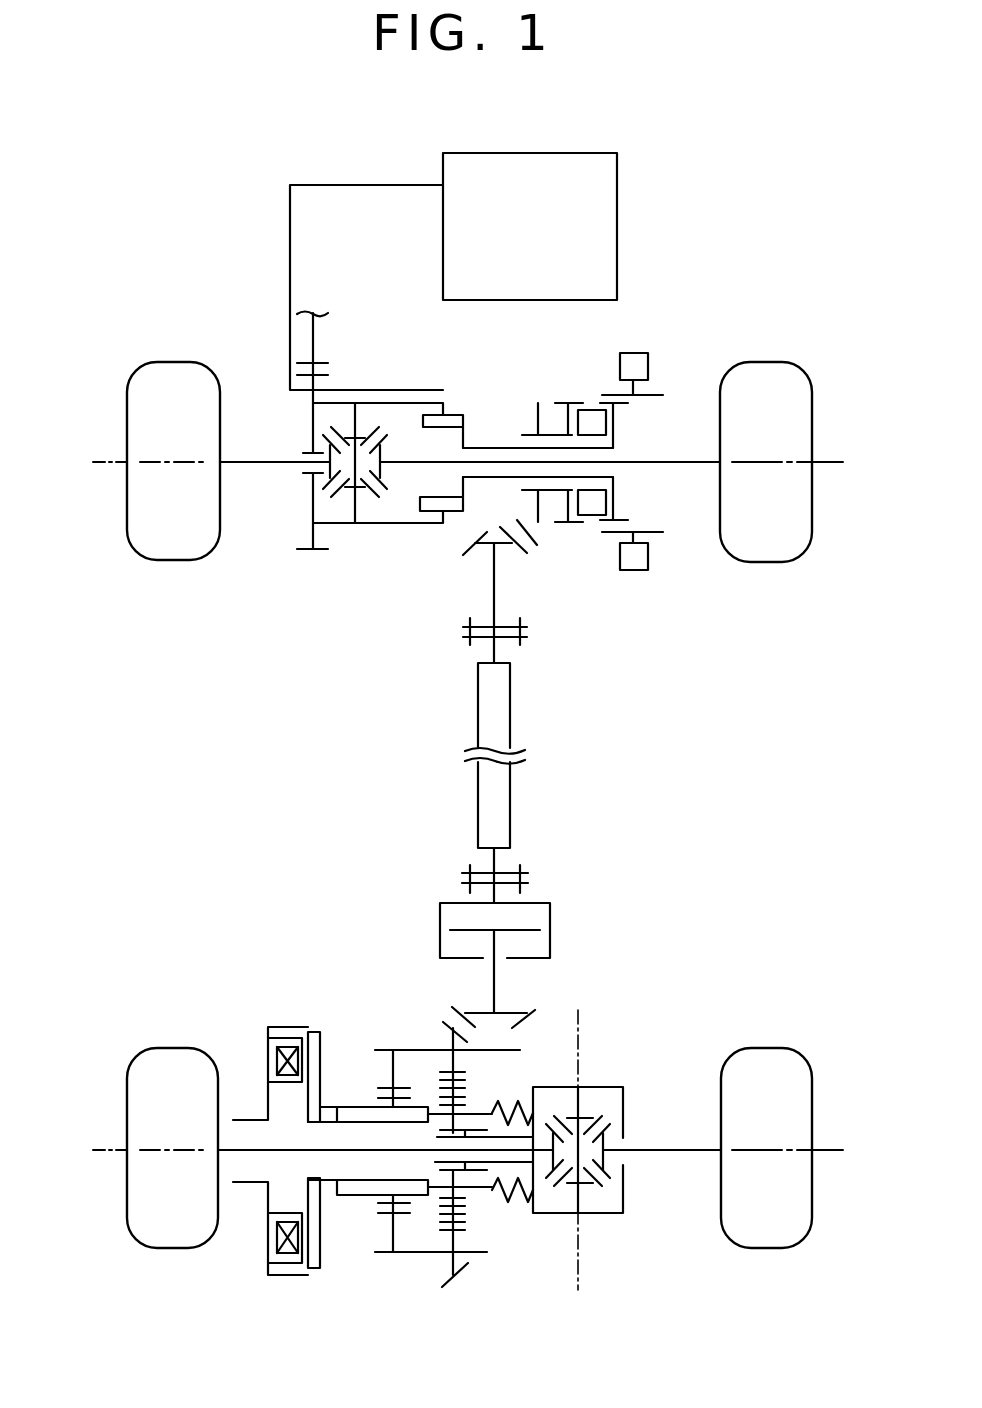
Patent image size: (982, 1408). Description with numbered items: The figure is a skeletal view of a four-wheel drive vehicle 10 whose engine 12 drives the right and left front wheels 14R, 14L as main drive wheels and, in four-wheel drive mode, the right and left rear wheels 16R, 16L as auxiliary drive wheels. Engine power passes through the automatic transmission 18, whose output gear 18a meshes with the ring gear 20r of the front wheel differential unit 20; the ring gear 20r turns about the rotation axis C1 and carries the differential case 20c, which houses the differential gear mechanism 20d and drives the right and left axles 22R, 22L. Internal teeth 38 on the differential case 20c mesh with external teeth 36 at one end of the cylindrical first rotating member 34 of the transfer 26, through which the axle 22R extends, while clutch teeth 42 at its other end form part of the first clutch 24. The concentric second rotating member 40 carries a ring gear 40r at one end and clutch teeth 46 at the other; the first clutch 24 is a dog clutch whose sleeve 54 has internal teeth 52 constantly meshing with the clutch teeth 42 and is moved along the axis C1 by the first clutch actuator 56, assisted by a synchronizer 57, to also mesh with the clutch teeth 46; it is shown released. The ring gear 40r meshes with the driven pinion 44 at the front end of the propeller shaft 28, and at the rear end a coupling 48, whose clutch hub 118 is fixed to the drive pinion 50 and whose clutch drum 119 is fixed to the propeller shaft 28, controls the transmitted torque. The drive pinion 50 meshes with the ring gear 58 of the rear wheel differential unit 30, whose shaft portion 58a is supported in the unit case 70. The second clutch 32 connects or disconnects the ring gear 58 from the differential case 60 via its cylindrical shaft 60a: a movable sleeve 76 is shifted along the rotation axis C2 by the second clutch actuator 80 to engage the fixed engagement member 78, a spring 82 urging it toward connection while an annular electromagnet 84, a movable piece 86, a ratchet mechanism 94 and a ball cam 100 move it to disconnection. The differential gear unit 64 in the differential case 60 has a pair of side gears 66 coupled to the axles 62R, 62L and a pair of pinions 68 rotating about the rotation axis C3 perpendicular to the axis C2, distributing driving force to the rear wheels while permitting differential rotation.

The four-wheel drive vehicle 10 is at (680, 83).
The engine 12 is at (555, 175).
The left front wheel 14L is at (150, 383).
The right front wheel 14R is at (767, 382).
The left rear wheel 16L is at (170, 1233).
The right rear wheel 16R is at (770, 1233).
The automatic transmission 18 is at (365, 185).
The output gear 18a is at (300, 358).
The front wheel differential unit 20 is at (332, 555).
The differential case 20c is at (377, 523).
The differential gear mechanism 20d is at (340, 508).
The ring gear 20r is at (303, 555).
The left axle 22L is at (257, 467).
The right axle 22R is at (687, 467).
The first clutch 24 is at (592, 588).
The transfer 26 is at (565, 617).
The propeller shaft 28 is at (498, 782).
The rear wheel differential unit 30 is at (310, 965).
The second clutch 32 is at (426, 1058).
The first rotating member 34 is at (492, 445).
The external teeth 36 is at (430, 463).
The internal teeth 38 is at (408, 403).
The second rotating member 40 is at (537, 402).
The ring gear 40r is at (517, 527).
The clutch teeth 42 is at (632, 402).
The driven pinion 44 is at (488, 588).
The clutch teeth 46 is at (553, 402).
The coupling 48 is at (540, 893).
The drive pinion 50 is at (524, 1004).
The internal teeth 52 is at (630, 400).
The sleeve 54 is at (658, 392).
The first clutch actuator 56 is at (637, 360).
The synchronizer 57 is at (592, 505).
The ring gear 58 is at (442, 1017).
The shaft portion 58a is at (482, 1048).
The differential case 60 is at (592, 1072).
The cylindrical shaft 60a is at (437, 1138).
The left axle 62L is at (278, 1148).
The right axle 62R is at (668, 1128).
The differential gear unit 64 is at (640, 1088).
The side gears 66 is at (607, 1168).
The pinions 68 is at (588, 1183).
The unit case 70 is at (273, 1127).
The movable sleeve 76 is at (460, 1110).
The fixed engagement member 78 is at (465, 1213).
The second clutch actuator 80 is at (306, 1019).
The spring 82 is at (540, 1068).
The annular electromagnet 84 is at (268, 1040).
The movable piece 86 is at (322, 1048).
The ratchet mechanism 94 is at (372, 1190).
The ball cam 100 is at (327, 1107).
The clutch hub 118 is at (492, 977).
The clutch drum 119 is at (452, 903).
The rotation axis C1 is at (122, 462).
The rotation axis C2 is at (140, 1150).
The rotation axis C3 is at (578, 1270).